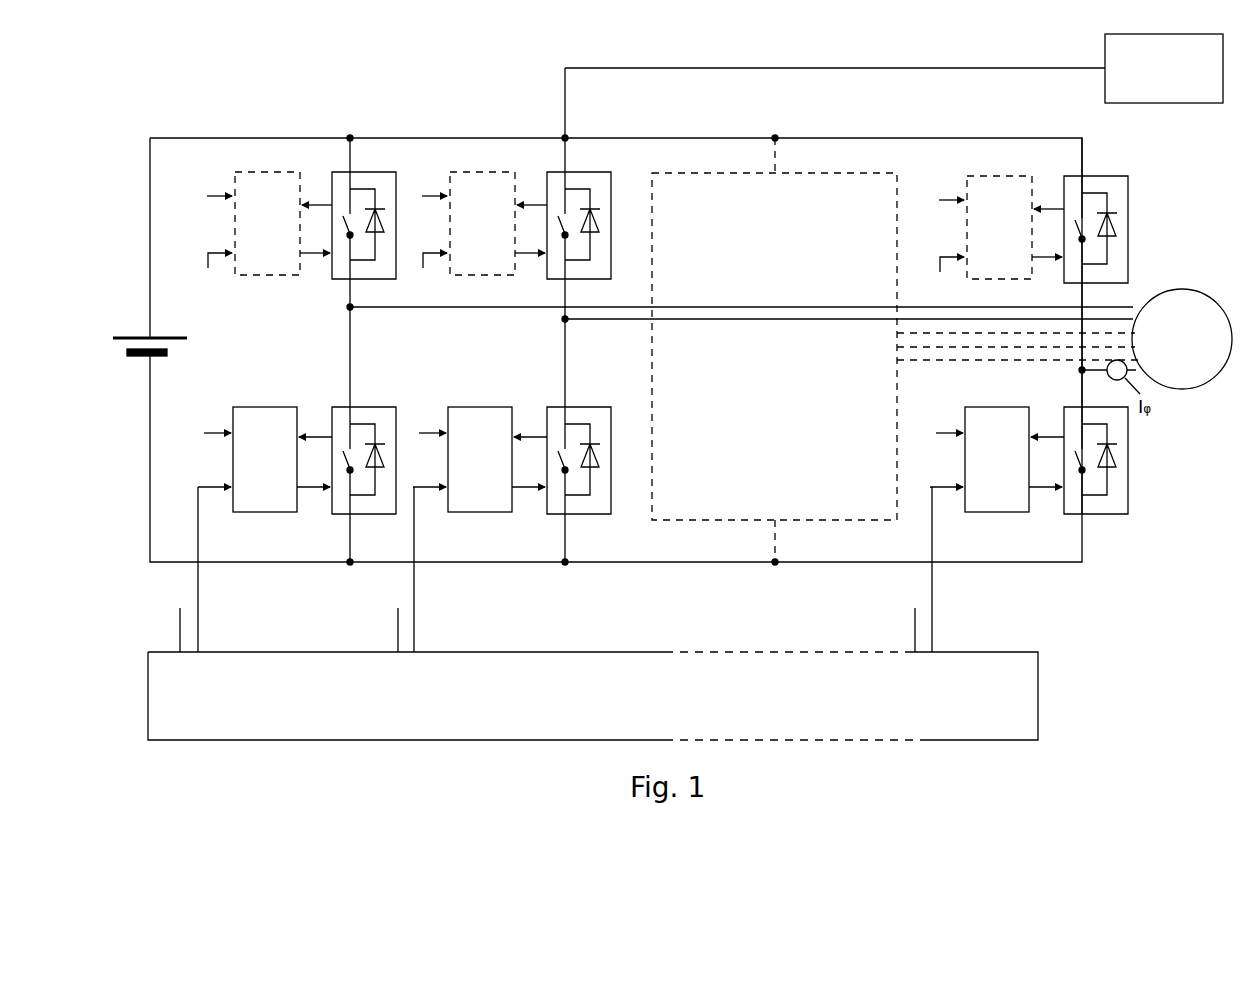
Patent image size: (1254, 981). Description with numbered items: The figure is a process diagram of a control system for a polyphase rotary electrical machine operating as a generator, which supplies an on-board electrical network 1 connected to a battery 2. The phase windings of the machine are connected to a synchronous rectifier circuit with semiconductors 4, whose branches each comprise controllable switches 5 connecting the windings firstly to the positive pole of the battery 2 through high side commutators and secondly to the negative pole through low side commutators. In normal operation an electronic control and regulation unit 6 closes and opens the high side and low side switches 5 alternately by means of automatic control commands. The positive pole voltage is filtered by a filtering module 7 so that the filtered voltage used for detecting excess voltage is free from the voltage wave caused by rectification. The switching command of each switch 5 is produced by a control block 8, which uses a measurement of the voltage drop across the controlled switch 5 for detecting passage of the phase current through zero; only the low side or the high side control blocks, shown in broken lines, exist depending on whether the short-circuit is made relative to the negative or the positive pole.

The on-board electrical network 1 is at (215, 138).
The battery 2 is at (147, 338).
The synchronous rectifier circuit with semiconductors 4 is at (410, 118).
The switch 5 is at (397, 248).
The electronic control and regulation unit 6 is at (606, 652).
The filtering module 7 is at (1178, 103).
The control block 8 is at (255, 277).